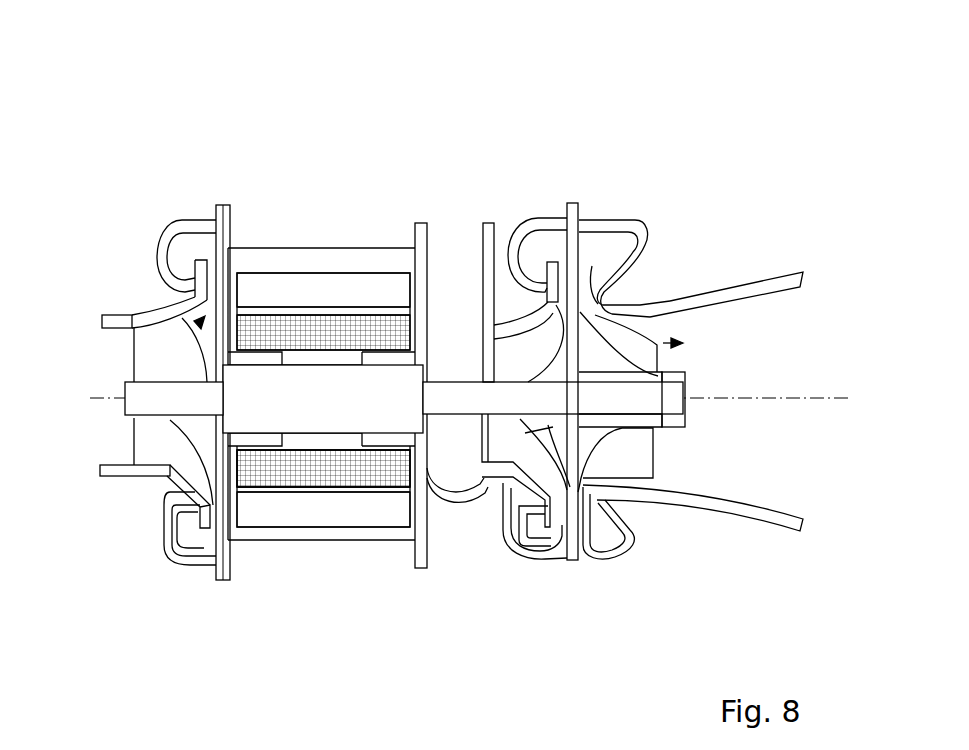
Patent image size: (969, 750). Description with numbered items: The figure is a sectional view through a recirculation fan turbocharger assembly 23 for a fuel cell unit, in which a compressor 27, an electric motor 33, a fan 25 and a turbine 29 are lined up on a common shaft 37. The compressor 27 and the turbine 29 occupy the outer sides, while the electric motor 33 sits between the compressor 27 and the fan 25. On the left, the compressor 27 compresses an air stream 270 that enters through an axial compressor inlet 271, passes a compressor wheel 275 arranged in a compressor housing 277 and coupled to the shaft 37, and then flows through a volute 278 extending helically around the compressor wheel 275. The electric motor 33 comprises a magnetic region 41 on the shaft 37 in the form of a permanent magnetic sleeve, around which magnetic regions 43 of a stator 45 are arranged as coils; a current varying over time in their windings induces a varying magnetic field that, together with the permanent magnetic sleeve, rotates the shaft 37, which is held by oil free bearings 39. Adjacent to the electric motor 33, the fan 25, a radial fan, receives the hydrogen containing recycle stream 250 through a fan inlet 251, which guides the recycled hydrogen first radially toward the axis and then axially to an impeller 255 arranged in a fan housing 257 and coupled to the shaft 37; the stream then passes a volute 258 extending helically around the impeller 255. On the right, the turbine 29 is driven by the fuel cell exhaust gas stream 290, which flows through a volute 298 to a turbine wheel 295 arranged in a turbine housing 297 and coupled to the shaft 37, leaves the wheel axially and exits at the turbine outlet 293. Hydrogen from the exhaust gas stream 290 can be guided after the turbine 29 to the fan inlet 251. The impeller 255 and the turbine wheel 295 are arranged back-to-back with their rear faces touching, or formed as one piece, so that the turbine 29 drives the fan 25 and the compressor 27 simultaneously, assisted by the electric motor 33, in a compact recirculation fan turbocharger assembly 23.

The recirculation fan turbocharger assembly 23 is at (706, 108).
The fan 25 is at (528, 211).
The compressor 27 is at (152, 298).
The turbine 29 is at (652, 279).
The electric motor 33 is at (330, 229).
The shaft 37 is at (653, 405).
The oil free bearings 39 is at (273, 452).
The magnetic region 41 is at (315, 417).
The magnetic regions 43 is at (273, 322).
The stator 45 is at (380, 305).
The hydrogen containing recycle stream 250 is at (512, 348).
The fan inlet 251 is at (437, 303).
The impeller 255 is at (513, 507).
The fan housing 257 is at (507, 542).
The volute 258 is at (535, 552).
The air stream 270 is at (106, 313).
The axial compressor inlet 271 is at (118, 348).
The compressor wheel 275 is at (188, 444).
The compressor housing 277 is at (170, 492).
The volute 278 is at (196, 547).
The fuel cell exhaust gas stream 290 is at (660, 357).
The turbine outlet 293 is at (725, 320).
The turbine wheel 295 is at (620, 430).
The turbine housing 297 is at (677, 500).
The volute 298 is at (597, 548).